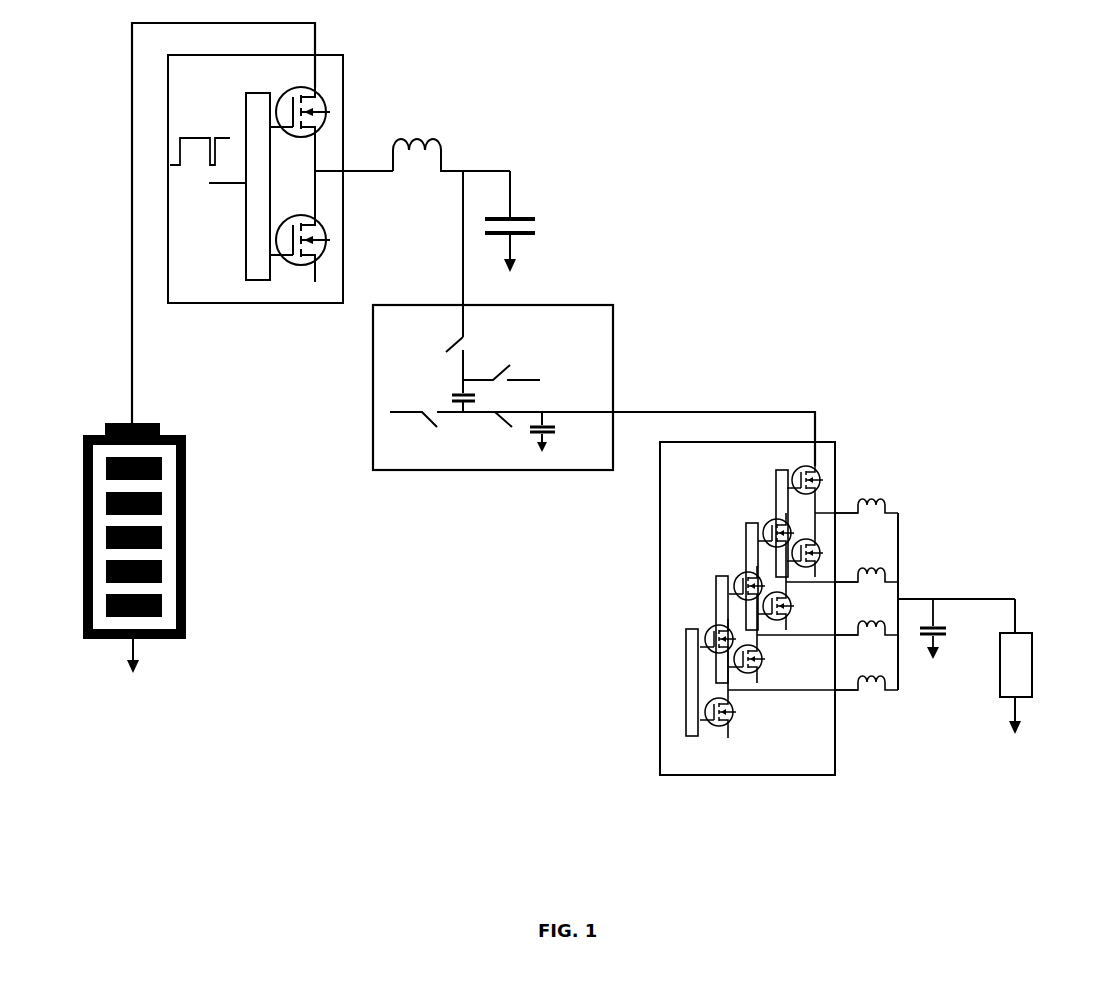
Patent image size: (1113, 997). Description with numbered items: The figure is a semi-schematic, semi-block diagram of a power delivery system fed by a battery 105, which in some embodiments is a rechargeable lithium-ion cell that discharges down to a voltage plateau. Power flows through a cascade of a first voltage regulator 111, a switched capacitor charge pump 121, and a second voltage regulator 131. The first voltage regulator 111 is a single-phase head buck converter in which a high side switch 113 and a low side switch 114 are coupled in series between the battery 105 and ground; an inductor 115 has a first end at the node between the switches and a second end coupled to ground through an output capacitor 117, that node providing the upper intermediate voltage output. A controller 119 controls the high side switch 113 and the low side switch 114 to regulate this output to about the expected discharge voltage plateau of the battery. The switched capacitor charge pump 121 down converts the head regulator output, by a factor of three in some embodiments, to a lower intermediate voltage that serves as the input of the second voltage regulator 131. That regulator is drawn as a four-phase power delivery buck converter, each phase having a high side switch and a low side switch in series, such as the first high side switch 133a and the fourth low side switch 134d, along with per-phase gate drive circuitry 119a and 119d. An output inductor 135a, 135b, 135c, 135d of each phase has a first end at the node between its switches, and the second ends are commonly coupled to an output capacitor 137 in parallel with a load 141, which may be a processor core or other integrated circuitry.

The battery 105 is at (186, 556).
The first voltage regulator 111 is at (286, 169).
The high side switch 113 is at (322, 103).
The low side switch 114 is at (322, 222).
The inductor 115 is at (438, 135).
The output capacitor 117 is at (518, 215).
The controller 119 is at (271, 168).
The switched capacitor charge pump 121 is at (585, 302).
The second voltage regulator 131 is at (734, 611).
The first high side switch 133a is at (820, 478).
The fourth low side switch 134d is at (716, 730).
The gate driver of phase a 119a is at (776, 486).
The gate driver of phase d 119d is at (682, 675).
The output inductor 135a is at (885, 493).
The output inductor 135b is at (885, 563).
The output inductor 135c is at (880, 606).
The output inductor 135d is at (880, 662).
The output capacitor 137 is at (938, 628).
The load 141 is at (1035, 672).